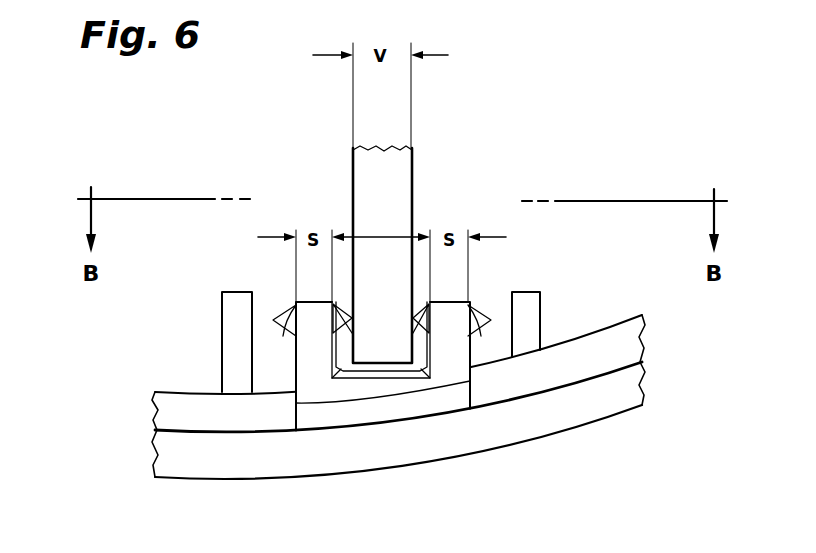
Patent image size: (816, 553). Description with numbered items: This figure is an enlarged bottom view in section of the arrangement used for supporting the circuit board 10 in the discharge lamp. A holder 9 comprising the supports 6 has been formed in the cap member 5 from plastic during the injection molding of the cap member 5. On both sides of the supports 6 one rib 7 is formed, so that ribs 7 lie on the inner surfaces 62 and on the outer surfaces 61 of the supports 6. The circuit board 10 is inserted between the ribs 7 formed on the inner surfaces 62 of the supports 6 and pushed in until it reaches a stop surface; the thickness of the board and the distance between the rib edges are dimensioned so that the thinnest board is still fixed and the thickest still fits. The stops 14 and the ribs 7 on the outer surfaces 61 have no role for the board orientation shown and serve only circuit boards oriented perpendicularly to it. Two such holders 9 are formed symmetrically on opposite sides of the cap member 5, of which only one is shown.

The cap member 5 is at (192, 458).
The supports 6 is at (313, 373).
The ribs 7 is at (332, 303).
The holder 9 is at (442, 372).
The circuit board 10 is at (412, 165).
The stops 14 is at (222, 337).
The outer surfaces 61 is at (296, 372).
The inner surfaces 62 is at (423, 362).